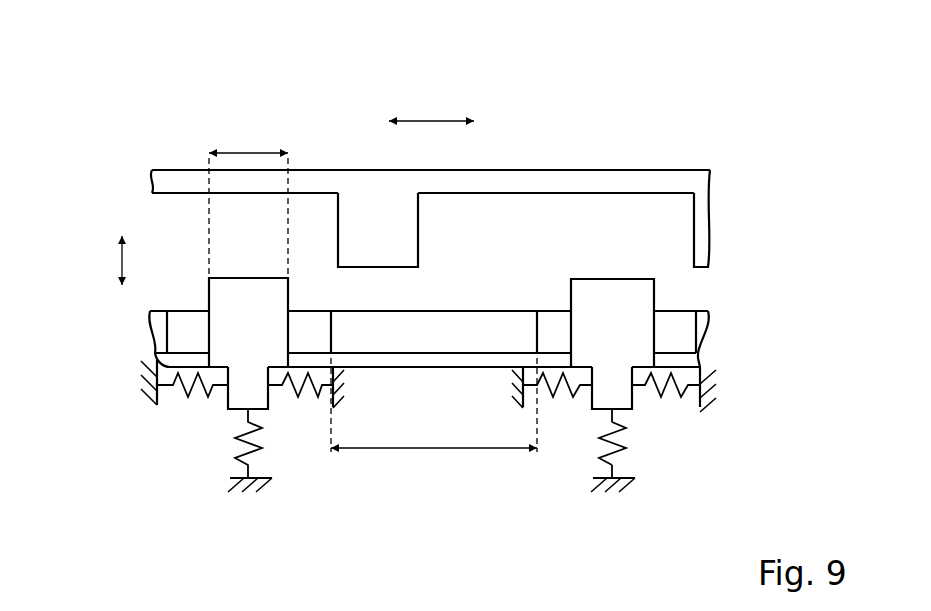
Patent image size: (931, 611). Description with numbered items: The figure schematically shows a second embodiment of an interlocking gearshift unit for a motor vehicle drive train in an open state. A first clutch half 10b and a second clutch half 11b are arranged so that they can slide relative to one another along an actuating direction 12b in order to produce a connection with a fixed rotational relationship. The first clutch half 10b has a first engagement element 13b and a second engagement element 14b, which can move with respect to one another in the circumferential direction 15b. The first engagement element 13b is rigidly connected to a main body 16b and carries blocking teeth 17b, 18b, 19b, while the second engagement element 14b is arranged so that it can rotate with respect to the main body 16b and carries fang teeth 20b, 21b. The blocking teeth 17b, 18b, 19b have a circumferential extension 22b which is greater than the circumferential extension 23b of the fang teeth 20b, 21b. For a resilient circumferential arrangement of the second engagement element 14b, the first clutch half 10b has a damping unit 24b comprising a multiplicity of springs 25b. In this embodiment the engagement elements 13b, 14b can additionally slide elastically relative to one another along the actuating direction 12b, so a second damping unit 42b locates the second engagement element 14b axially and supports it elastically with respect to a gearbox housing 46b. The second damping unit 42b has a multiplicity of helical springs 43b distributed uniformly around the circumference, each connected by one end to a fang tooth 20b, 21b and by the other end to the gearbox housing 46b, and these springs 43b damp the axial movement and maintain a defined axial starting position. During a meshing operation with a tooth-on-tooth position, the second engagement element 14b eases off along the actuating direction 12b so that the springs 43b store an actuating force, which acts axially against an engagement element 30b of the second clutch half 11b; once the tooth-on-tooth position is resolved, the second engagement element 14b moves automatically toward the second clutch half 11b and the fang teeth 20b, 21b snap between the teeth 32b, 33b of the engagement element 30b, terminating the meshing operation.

The first clutch half 10b is at (725, 343).
The second clutch half 11b is at (723, 204).
The actuating direction 12b is at (122, 262).
The first engagement element 13b is at (421, 340).
The second engagement element 14b is at (357, 357).
The circumferential direction 15b is at (431, 120).
The main body 16b is at (699, 325).
The blocking tooth 17b is at (512, 297).
The blocking tooth 18b is at (163, 298).
The blocking tooth 19b is at (702, 307).
The fang tooth 20b is at (249, 273).
The fang tooth 21b is at (633, 268).
The circumferential extension 22b is at (503, 452).
The circumferential extension 23b is at (256, 150).
The damping unit 24b is at (137, 388).
The springs 25b is at (182, 392).
The engagement element 30b is at (587, 185).
The tooth 32b is at (337, 207).
The tooth 33b is at (688, 213).
The second damping unit 42b is at (640, 447).
The springs 43b is at (603, 440).
The gearbox housing 46b is at (233, 498).